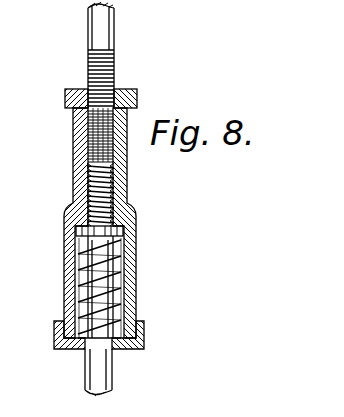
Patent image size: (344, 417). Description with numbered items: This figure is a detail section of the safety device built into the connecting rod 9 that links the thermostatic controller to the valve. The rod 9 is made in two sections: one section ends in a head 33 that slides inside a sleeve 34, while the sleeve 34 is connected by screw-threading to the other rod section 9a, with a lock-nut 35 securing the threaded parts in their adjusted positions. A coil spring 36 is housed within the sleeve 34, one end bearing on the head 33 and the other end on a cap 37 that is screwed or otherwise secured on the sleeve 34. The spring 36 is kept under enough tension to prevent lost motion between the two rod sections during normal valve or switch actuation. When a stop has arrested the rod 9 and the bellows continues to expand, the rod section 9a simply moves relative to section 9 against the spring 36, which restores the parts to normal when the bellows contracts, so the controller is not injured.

The connecting rod 9 is at (113, 375).
The rod section 9a is at (115, 36).
The head 33 is at (77, 232).
The sleeve 34 is at (136, 251).
The lock-nut 35 is at (137, 95).
The coil spring 36 is at (124, 290).
The cap 37 is at (145, 338).